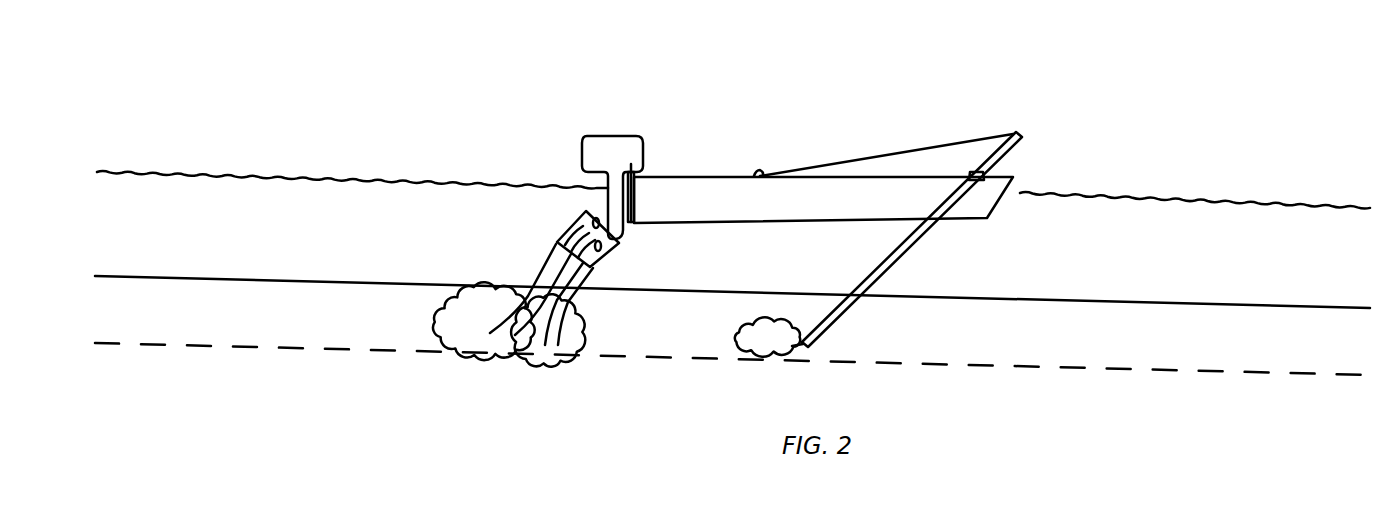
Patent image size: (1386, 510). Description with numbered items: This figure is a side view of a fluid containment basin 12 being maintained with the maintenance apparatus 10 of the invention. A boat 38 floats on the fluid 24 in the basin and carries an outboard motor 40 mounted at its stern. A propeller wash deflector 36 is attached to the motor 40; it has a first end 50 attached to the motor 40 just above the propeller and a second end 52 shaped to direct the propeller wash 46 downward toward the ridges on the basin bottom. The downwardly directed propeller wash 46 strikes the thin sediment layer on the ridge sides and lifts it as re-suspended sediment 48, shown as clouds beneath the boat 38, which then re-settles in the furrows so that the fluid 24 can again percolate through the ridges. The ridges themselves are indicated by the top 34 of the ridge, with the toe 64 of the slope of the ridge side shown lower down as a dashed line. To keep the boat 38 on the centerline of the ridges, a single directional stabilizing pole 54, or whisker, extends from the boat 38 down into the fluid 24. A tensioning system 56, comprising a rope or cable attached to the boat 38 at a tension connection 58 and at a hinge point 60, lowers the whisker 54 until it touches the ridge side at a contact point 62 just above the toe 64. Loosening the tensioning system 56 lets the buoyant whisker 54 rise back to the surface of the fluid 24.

The maintenance apparatus 10 is at (575, 222).
The fluid containment basin 12 is at (928, 143).
The fluid 24 is at (1145, 233).
The top of ridges 34 is at (1030, 300).
The propeller wash deflector 36 is at (618, 244).
The boat 38 is at (677, 179).
The outboard motor 40 is at (607, 146).
The propeller wash 46 is at (545, 263).
The re-suspended sediment 48 is at (572, 328).
The first end 50 is at (598, 210).
The second end 52 is at (611, 303).
The directional stabilizing pole 54 is at (913, 245).
The tensioning system 56 is at (853, 155).
The tension connection 58 is at (753, 172).
The hinge point 60 is at (997, 170).
The contact point 62 is at (820, 347).
The toe of the slope 64 is at (278, 350).